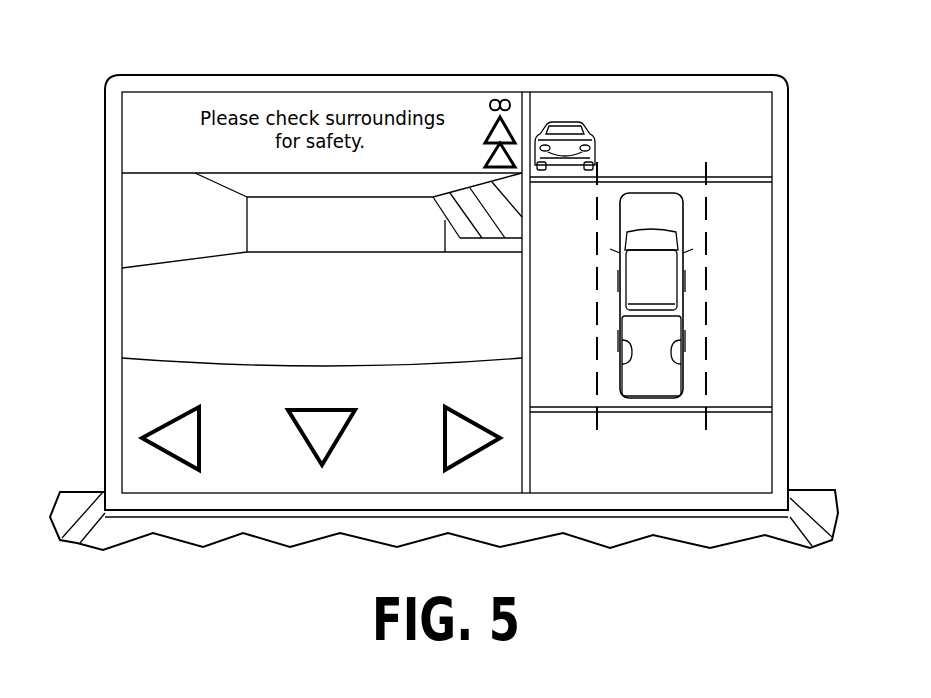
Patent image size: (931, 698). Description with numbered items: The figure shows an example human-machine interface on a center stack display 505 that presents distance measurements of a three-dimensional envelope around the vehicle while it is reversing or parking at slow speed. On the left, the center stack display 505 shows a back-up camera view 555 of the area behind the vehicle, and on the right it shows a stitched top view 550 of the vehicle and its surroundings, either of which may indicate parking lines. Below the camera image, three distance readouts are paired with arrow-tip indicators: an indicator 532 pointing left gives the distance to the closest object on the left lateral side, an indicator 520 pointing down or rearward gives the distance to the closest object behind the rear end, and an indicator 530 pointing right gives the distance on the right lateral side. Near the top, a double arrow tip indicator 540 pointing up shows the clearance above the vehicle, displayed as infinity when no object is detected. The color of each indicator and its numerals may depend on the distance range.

The center stack display 505 is at (788, 147).
The indicator 520 is at (322, 465).
The indicator 530 is at (480, 453).
The indicator 532 is at (158, 451).
The indicator 540 is at (563, 122).
The stitched top view 550 is at (683, 347).
The back-up camera view 555 is at (225, 287).